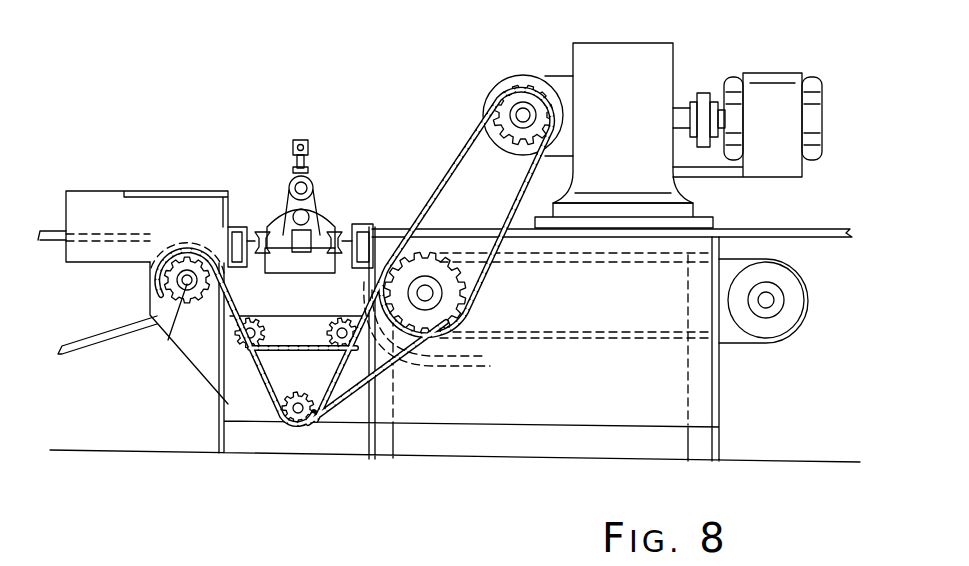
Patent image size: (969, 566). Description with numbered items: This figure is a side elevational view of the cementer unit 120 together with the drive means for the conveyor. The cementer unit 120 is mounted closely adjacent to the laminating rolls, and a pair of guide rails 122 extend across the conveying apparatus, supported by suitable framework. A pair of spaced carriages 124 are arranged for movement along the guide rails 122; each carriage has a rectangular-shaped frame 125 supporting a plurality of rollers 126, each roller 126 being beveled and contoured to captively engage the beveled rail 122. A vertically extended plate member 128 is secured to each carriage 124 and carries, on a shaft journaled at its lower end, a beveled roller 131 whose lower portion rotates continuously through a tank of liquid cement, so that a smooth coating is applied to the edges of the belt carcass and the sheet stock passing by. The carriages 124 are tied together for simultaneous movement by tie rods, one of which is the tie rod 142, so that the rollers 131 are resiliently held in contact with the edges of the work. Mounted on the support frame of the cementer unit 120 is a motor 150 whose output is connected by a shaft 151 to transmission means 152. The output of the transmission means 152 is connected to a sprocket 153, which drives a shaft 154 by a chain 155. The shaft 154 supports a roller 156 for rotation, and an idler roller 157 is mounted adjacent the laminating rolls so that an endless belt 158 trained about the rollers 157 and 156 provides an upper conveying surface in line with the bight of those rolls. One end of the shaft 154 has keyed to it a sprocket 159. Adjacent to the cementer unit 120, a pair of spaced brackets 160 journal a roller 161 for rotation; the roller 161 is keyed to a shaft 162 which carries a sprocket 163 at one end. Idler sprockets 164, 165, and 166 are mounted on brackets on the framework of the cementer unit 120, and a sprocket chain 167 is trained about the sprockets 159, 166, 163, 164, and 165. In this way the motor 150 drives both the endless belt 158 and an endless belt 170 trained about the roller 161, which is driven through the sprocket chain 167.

The cementer unit 120 is at (268, 113).
The guide rails 122 is at (250, 221).
The carriages 124 is at (249, 235).
The rectangular-shaped frame 125 is at (257, 213).
The rollers 126 is at (302, 268).
The plate member 128 is at (313, 188).
The beveled roller 131 is at (325, 216).
The tie rod 142 is at (308, 178).
The motor 150 is at (790, 110).
The shaft 151 is at (727, 117).
The transmission means 152 is at (635, 62).
The sprocket 153 is at (527, 93).
The shaft 154 is at (428, 292).
The chain 155 is at (535, 182).
The roller 156 is at (470, 354).
The idler roller 157 is at (792, 310).
The endless belt 158 is at (735, 340).
The sprocket 159 is at (445, 364).
The brackets 160 is at (102, 208).
The roller 161 is at (165, 302).
The shaft 162 is at (178, 345).
The sprocket 163 is at (196, 330).
The idler sprocket 164 is at (245, 348).
The idler sprocket 165 is at (380, 378).
The idler sprocket 166 is at (292, 428).
The sprocket chain 167 is at (340, 410).
The endless belt 170 is at (58, 240).